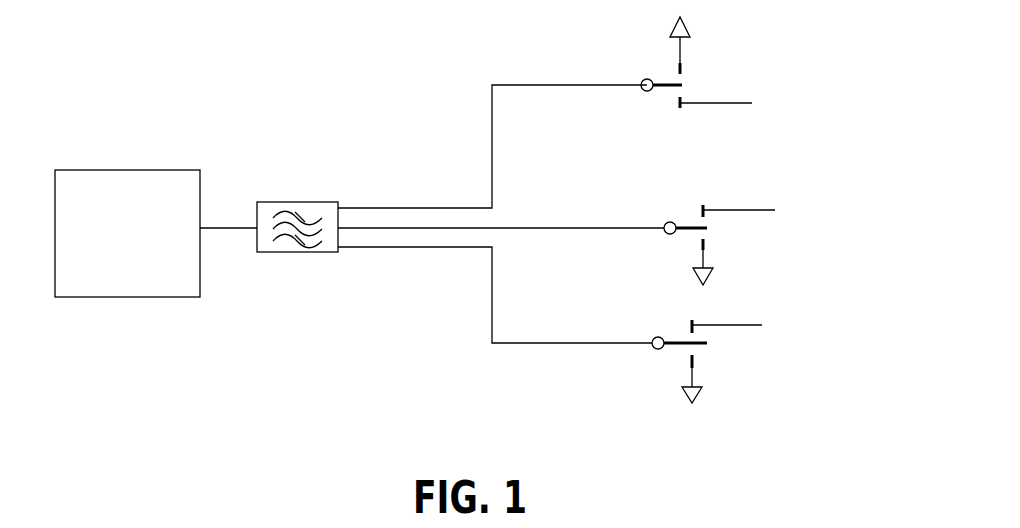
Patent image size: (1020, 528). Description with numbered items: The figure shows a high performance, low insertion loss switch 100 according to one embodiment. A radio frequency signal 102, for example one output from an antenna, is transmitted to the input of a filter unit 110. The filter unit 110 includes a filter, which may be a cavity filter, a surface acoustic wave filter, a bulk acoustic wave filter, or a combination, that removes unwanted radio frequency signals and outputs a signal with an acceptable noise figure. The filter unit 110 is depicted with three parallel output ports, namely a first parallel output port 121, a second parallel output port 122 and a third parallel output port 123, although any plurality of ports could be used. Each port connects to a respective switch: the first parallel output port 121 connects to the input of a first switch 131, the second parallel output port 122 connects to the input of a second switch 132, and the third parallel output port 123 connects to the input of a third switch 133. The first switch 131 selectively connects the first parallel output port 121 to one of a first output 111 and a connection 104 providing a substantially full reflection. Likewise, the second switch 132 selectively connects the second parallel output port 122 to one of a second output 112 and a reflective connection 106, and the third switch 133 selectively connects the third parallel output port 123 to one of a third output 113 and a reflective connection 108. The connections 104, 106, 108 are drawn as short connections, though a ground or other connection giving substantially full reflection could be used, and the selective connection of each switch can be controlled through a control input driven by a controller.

The high performance switch 100 is at (333, 345).
The radio frequency signal 102 is at (131, 297).
The connection providing a substantially full reflection 104 is at (646, 33).
The connection providing a substantially full reflection 106 is at (734, 265).
The connection providing a substantially full reflection 108 is at (660, 390).
The filter unit 110 is at (310, 185).
The output 1 111 is at (772, 90).
The output 2 112 is at (777, 197).
The output 3 113 is at (770, 311).
The parallel output port 1 121 is at (430, 207).
The parallel output port 2 122 is at (407, 228).
The parallel output port 3 123 is at (517, 343).
The switch 1 131 is at (676, 110).
The switch 2 132 is at (665, 211).
The switch 3 133 is at (662, 330).